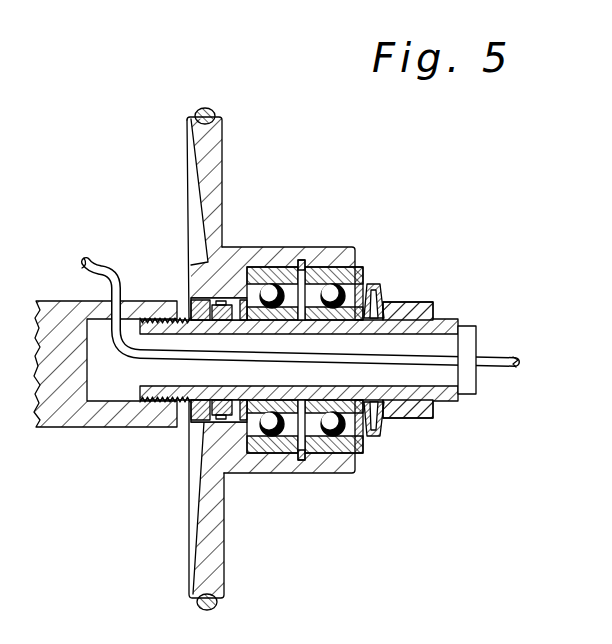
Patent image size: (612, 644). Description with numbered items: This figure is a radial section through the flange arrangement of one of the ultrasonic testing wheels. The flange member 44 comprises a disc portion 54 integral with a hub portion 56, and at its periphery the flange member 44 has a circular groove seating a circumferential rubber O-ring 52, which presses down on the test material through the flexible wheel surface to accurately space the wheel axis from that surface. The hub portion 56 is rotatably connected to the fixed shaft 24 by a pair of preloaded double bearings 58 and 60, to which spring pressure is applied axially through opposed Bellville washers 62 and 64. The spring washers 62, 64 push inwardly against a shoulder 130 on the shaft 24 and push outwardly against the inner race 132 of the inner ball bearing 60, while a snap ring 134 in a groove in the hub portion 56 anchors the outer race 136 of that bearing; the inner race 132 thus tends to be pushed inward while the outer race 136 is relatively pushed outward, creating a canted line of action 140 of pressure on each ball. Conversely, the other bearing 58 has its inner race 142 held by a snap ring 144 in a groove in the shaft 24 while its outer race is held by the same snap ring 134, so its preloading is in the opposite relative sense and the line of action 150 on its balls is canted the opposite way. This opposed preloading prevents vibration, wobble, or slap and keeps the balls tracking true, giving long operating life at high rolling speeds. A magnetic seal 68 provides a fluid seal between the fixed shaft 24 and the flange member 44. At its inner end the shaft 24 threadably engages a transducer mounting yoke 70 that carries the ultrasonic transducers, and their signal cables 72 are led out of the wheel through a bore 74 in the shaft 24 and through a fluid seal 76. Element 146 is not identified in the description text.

The fixed shaft 24 is at (436, 308).
The flange member 44 is at (180, 156).
The O-ring 52 is at (212, 108).
The disc portion 54 is at (225, 133).
The hub portion 56 is at (320, 463).
The bearing 58 is at (268, 445).
The inner ball bearing 60 is at (367, 445).
The Bellville washer 62 is at (377, 286).
The Bellville washer 64 is at (381, 300).
The magnetic seal 68 is at (192, 428).
The transducer mounting yoke 70 is at (97, 428).
The signal cables 72 is at (100, 273).
The bore 74 is at (196, 384).
The fluid seal 76 is at (478, 332).
The shoulder 130 is at (412, 304).
The inner race 132 is at (333, 310).
The snap ring 134 is at (301, 260).
The outer race 136 is at (340, 268).
The line of action 140 is at (366, 283).
The inner race 142 is at (272, 312).
The snap ring 144 is at (243, 322).
The seal block 146 is at (252, 298).
The line of action 150 is at (268, 268).